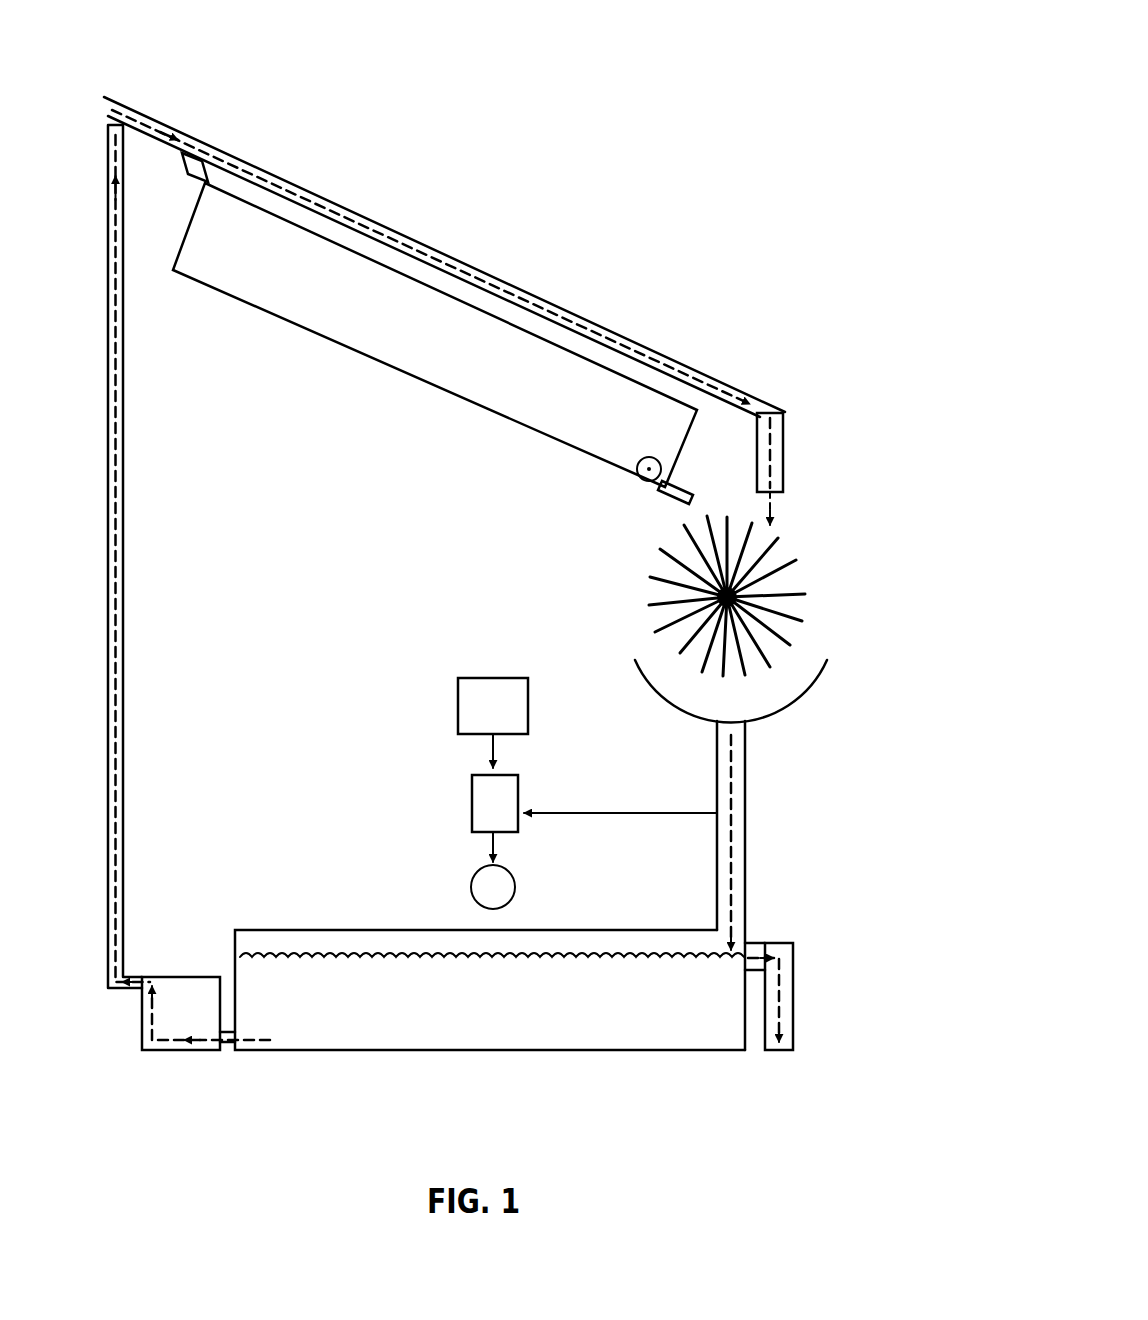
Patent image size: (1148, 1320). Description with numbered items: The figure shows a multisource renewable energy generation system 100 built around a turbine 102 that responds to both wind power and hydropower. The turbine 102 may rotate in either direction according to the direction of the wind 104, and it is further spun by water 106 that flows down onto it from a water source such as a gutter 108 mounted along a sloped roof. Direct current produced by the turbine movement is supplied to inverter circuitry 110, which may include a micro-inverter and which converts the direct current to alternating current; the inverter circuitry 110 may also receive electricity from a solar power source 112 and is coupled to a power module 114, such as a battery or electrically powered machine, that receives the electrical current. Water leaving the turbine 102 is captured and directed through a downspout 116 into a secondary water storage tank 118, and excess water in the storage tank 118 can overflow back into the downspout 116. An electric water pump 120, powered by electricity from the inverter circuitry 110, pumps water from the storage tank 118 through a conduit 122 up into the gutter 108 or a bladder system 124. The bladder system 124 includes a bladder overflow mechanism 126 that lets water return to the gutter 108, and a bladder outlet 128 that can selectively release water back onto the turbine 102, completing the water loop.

The multisource renewable energy generation system 100 is at (706, 60).
The turbine 102 is at (688, 533).
The wind 104 is at (618, 591).
The water 106 is at (776, 522).
The gutter 108 is at (783, 445).
The inverter circuitry 110 is at (594, 818).
The solar power source 112 is at (493, 723).
The power module 114 is at (493, 887).
The downspout 116 is at (746, 854).
The secondary water storage tank 118 is at (318, 928).
The electric water pump 120 is at (181, 1013).
The conduit 122 is at (123, 553).
The bladder system 124 is at (435, 343).
The bladder overflow mechanism 126 is at (200, 190).
The bladder outlet 128 is at (667, 471).